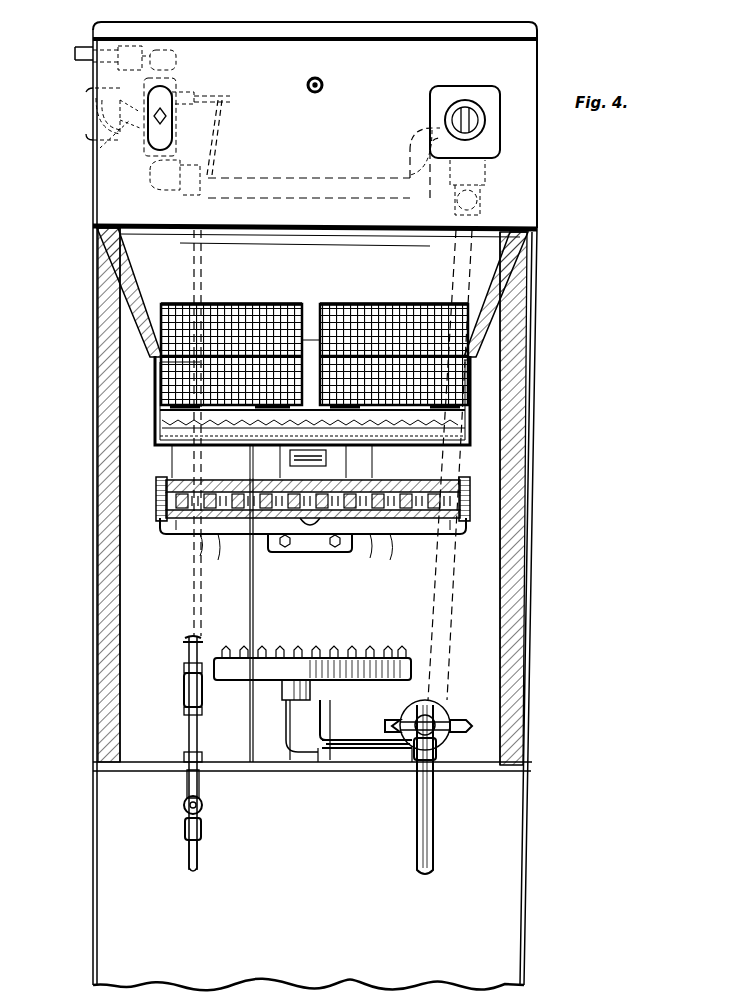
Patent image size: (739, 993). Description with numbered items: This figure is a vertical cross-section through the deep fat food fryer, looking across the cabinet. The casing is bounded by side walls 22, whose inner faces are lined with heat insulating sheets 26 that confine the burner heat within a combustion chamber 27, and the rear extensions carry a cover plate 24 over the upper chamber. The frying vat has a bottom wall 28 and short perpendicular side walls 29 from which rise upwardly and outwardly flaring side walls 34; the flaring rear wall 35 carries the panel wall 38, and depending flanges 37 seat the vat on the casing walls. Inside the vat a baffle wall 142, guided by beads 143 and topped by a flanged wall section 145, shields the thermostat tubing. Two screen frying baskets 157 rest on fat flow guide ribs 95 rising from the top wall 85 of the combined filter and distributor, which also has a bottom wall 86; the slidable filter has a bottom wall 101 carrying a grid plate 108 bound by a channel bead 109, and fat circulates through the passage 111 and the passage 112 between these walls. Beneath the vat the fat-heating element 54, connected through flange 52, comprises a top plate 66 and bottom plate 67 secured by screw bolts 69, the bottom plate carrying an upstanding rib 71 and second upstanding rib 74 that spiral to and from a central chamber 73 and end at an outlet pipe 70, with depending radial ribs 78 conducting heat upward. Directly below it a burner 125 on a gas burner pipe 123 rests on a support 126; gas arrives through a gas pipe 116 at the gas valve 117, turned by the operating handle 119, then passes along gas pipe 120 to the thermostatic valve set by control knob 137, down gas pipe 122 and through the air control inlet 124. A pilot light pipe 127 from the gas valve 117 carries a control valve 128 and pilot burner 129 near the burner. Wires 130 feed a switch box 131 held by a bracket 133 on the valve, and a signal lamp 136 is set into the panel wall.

The side walls 22 is at (90, 852).
The cover plate 24 is at (530, 36).
The heat insulating sheets 26 is at (492, 620).
The combustion chamber 27 is at (380, 592).
The bottom wall 28 is at (170, 470).
The perpendicular side walls 29 is at (162, 410).
The upwardly and outwardly flaring side walls 34 is at (100, 290).
The upwardly flaring rear wall 35 is at (315, 291).
The depending flanges 37 is at (97, 235).
The panel wall 38 is at (528, 190).
The flange 52 is at (328, 558).
The fat-heating element 54 is at (356, 597).
The top plate 66 is at (313, 487).
The bottom plate 67 is at (341, 557).
The screw bolts 69 is at (158, 482).
The outlet pipe 70 is at (358, 463).
The upstanding rib 71 is at (180, 526).
The central chamber 73 is at (310, 558).
The second upstanding rib 74 is at (276, 558).
The depending radial ribs 78 is at (242, 562).
The top wall 85 is at (310, 366).
The bottom wall 86 is at (236, 452).
The fat flow guide ribs 95 is at (317, 396).
The bottom wall 101 is at (155, 447).
The grid plate 108 is at (387, 463).
The channel bead 109 is at (480, 424).
The passage 111 is at (472, 440).
The passage 112 is at (290, 463).
The gas pipe 116 is at (76, 54).
The gas valve 117 is at (178, 95).
The operating handle 119 is at (150, 132).
The gas pipe 120 is at (318, 178).
The gas pipe 122 is at (448, 296).
The gas burner pipe 123 is at (352, 755).
The air control inlet 124 is at (440, 712).
The burner 125 is at (324, 664).
The support 126 is at (263, 773).
The pilot light pipe 127 is at (222, 134).
The control valve 128 is at (184, 808).
The pilot burner 129 is at (186, 652).
The wires 130 is at (90, 90).
The switch box 131 is at (98, 118).
The bracket 133 is at (108, 156).
The signal lamp 136 is at (325, 88).
The control knob 137 is at (465, 110).
The baffle wall 142 is at (158, 375).
The beads 143 is at (472, 376).
The flanged wall section 145 is at (475, 350).
The screen frying basket 157 is at (287, 305).